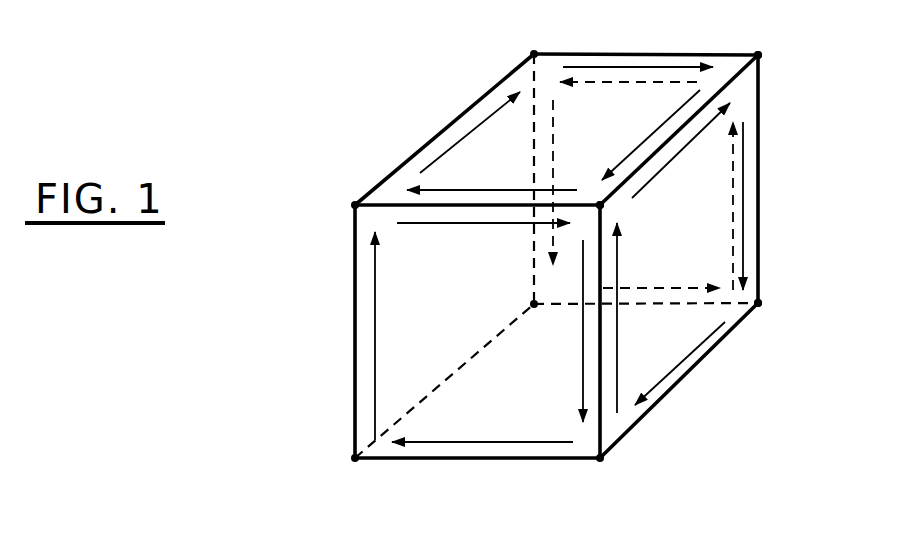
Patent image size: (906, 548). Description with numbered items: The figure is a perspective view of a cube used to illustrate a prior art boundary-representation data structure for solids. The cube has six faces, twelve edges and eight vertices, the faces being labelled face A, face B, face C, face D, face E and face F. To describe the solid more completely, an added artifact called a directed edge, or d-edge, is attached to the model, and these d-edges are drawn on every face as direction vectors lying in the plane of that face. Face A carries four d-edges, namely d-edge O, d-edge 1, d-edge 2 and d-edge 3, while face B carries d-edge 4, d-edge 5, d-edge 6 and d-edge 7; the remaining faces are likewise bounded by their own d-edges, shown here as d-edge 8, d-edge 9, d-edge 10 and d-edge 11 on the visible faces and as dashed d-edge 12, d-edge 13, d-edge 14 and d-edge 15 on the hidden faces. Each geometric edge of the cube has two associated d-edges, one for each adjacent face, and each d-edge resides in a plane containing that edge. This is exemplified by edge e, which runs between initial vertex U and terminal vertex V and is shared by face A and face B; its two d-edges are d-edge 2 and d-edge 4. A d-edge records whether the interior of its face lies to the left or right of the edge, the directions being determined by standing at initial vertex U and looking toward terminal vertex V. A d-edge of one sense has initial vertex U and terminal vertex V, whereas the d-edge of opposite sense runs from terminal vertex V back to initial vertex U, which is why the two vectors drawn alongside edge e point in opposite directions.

The d-edge 1 is at (642, 67).
The d-edge 2 is at (667, 118).
The d-edge 3 is at (475, 190).
The d-edge 4 is at (663, 168).
The d-edge 5 is at (745, 188).
The d-edge 6 is at (683, 362).
The d-edge 7 is at (620, 336).
The d-edge 8 is at (491, 223).
The d-edge 9 is at (583, 360).
The d-edge 10 is at (525, 444).
The d-edge 11 is at (375, 337).
The d-edge 12 is at (621, 81).
The d-edge 13 is at (557, 163).
The d-edge 14 is at (637, 288).
The d-edge 15 is at (731, 195).
The d-edge O is at (470, 129).
The face A is at (517, 128).
The face F is at (728, 54).
The initial vertex U is at (769, 51).
The edge e is at (738, 78).
The face B is at (748, 294).
The face C is at (624, 429).
The terminal vertex V is at (590, 218).
The face D is at (407, 272).
The face E is at (411, 373).